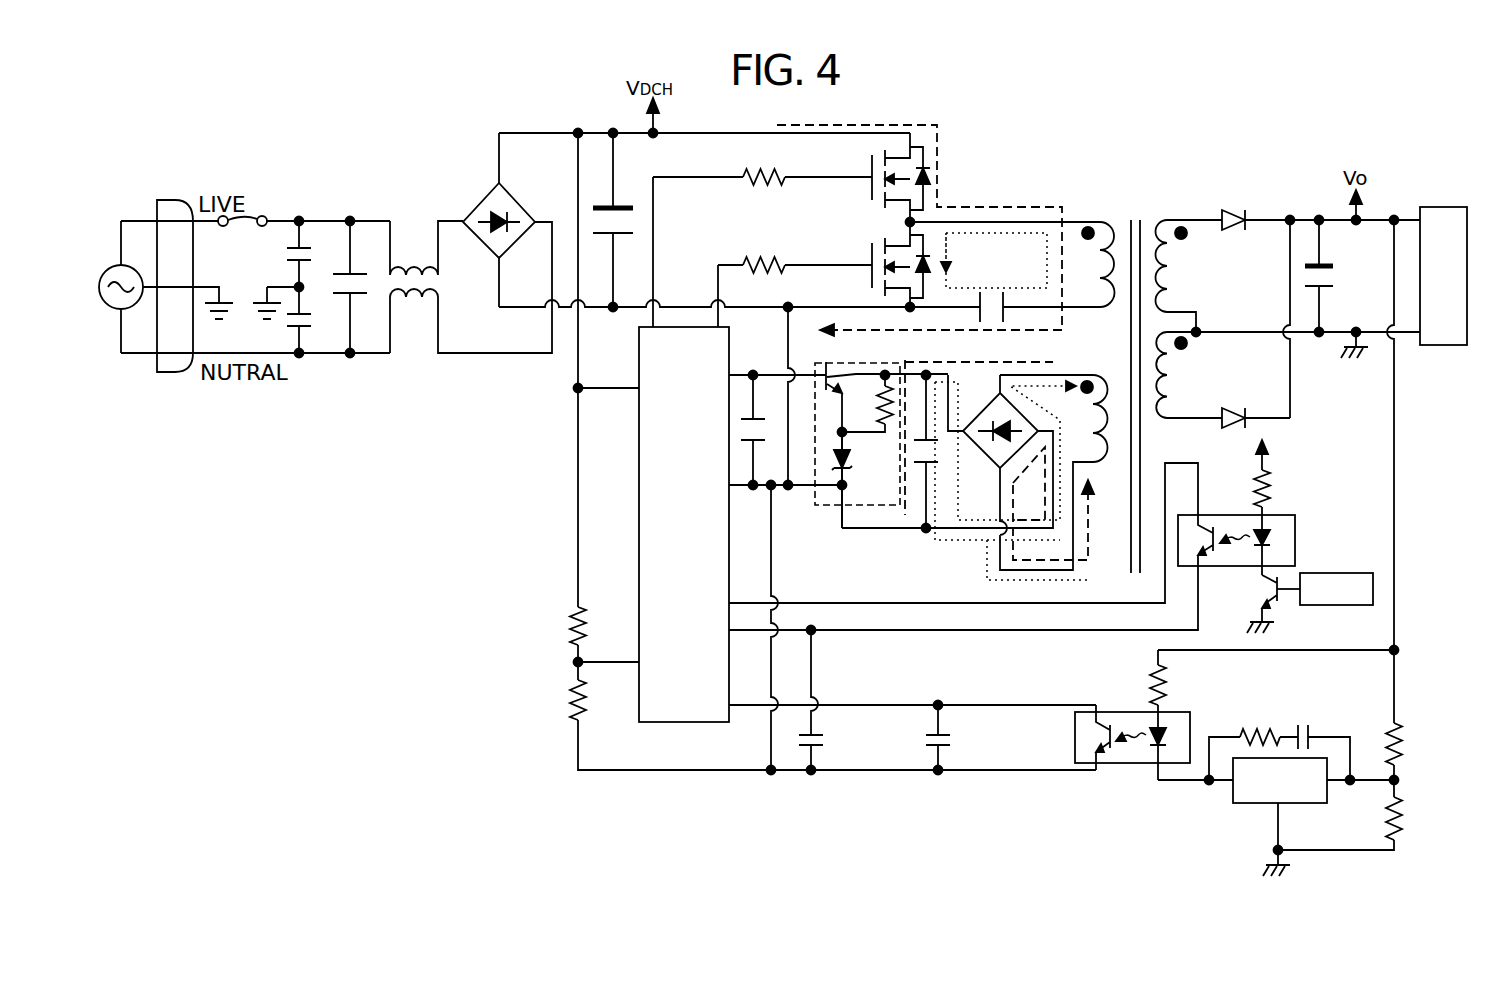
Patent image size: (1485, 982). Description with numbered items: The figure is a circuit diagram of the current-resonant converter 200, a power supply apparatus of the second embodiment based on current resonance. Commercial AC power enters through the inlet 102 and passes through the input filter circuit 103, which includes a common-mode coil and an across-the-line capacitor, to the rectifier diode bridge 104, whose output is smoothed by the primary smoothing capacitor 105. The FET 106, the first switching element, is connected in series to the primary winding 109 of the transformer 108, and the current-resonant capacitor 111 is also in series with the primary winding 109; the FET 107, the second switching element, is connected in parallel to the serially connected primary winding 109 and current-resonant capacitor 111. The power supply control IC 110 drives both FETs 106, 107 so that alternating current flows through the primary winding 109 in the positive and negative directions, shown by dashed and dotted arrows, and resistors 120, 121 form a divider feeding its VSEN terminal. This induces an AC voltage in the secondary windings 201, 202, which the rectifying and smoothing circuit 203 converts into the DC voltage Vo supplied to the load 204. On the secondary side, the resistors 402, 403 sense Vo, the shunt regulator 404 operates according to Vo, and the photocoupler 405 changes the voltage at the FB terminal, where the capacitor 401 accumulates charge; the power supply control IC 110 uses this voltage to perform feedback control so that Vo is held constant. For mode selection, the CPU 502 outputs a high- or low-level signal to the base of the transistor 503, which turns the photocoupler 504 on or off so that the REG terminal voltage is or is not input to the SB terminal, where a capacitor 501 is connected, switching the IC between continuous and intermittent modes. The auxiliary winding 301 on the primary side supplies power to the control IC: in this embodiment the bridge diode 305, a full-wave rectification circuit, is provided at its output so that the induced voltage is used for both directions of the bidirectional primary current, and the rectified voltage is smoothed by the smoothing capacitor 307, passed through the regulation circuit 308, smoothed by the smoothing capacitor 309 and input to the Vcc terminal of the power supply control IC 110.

The inlet 102 is at (157, 206).
The input filter circuit 103 is at (363, 205).
The rectifier diode bridge 104 is at (473, 195).
The primary smoothing capacitor 105 is at (630, 220).
The FET 106 is at (862, 190).
The FET 107 is at (862, 255).
The transformer 108 is at (1142, 214).
The primary winding 109 is at (1097, 216).
The power supply control IC 110 is at (633, 703).
The current-resonant capacitor 111 is at (985, 296).
The voltage dividing resistor 120 is at (565, 624).
The voltage dividing resistor 121 is at (565, 698).
The current-resonant converter 200 is at (987, 120).
The secondary winding 201 is at (1183, 295).
The secondary winding 202 is at (1183, 400).
The rectifying and smoothing circuit 203 is at (1276, 210).
The load 204 is at (1438, 203).
The auxiliary winding 301 is at (1103, 370).
The bridge diode 305 is at (968, 448).
The smoothing capacitor 307 is at (918, 508).
The regulation circuit 308 is at (828, 512).
The smoothing capacitor 309 is at (753, 500).
The capacitor 401 is at (952, 742).
The resistor 402 is at (1412, 748).
The resistor 403 is at (1412, 821).
The shunt regulator 404 is at (1245, 810).
The photocoupler 405 is at (1200, 722).
The standby capacitor 501 is at (826, 742).
The CPU 502 is at (1320, 565).
The transistor 503 is at (1283, 612).
The photocoupler 504 is at (1290, 512).